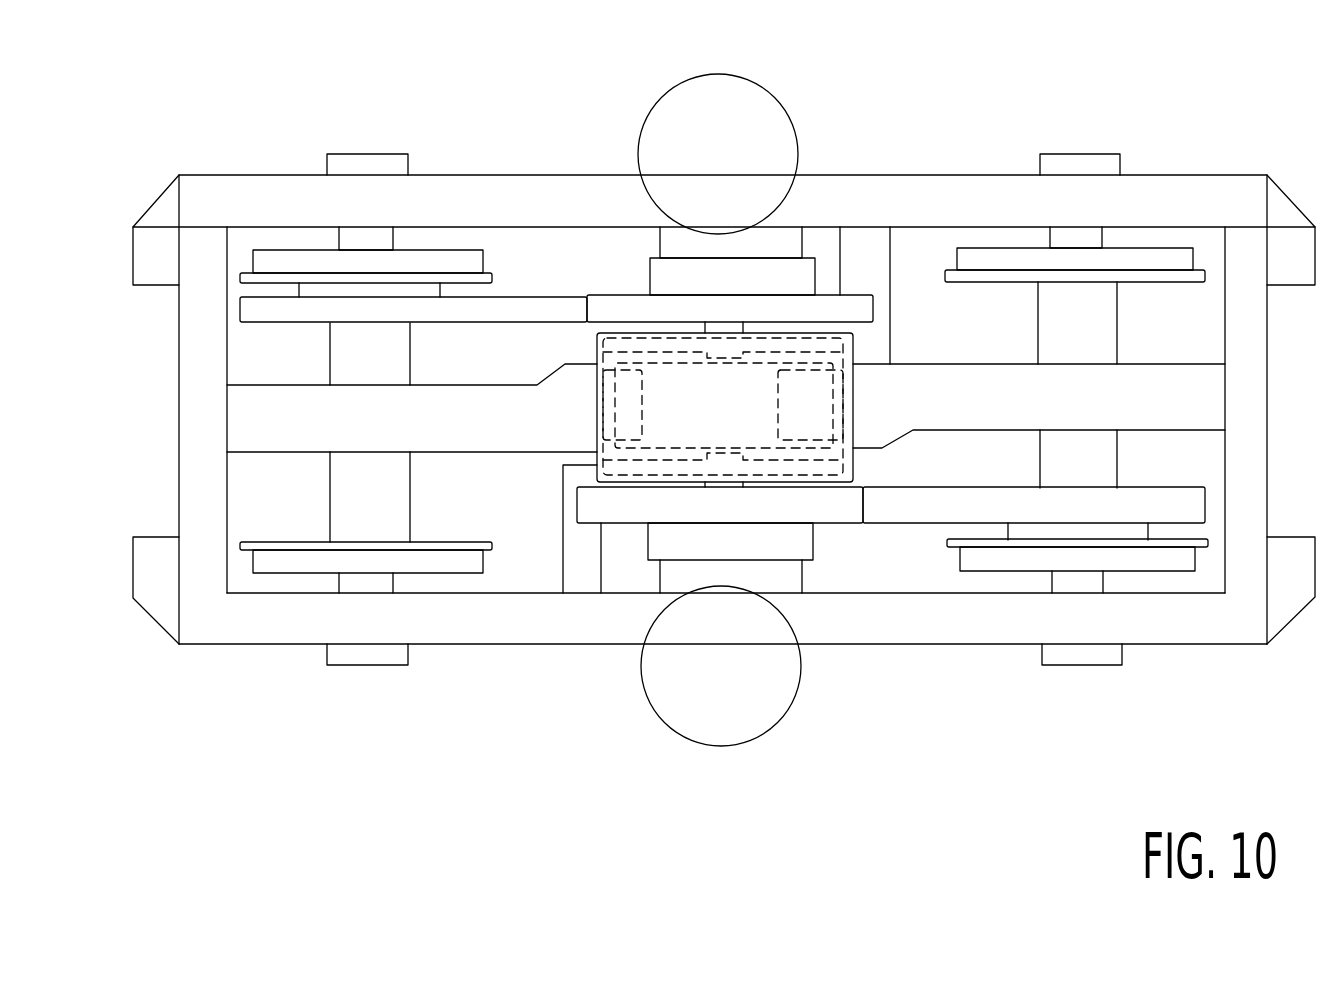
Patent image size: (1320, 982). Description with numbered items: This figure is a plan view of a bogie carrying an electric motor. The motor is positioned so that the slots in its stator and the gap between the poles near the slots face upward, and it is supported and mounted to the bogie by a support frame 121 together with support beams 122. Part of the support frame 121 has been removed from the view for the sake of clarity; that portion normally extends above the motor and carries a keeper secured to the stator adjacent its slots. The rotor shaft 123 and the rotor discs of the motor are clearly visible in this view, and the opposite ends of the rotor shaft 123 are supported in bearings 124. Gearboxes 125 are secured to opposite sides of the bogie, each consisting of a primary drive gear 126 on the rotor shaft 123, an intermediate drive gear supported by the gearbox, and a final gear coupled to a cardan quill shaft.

The support frame 121 is at (505, 437).
The support beams 122 is at (857, 260).
The rotor shaft 123 is at (725, 340).
The bearings 124 is at (680, 273).
The gearboxes 125 is at (358, 305).
The primary drive gear 126 is at (692, 310).